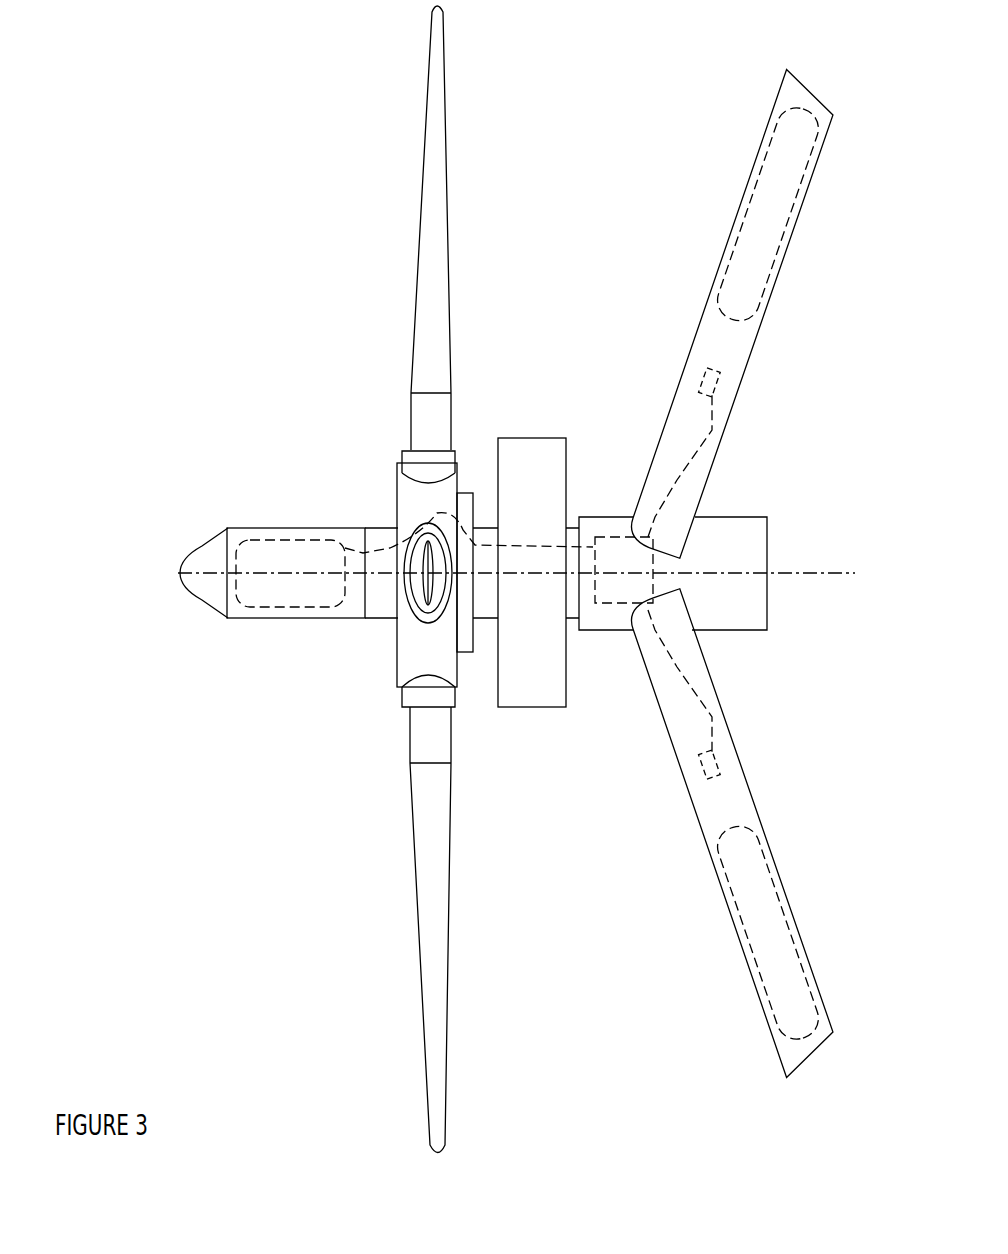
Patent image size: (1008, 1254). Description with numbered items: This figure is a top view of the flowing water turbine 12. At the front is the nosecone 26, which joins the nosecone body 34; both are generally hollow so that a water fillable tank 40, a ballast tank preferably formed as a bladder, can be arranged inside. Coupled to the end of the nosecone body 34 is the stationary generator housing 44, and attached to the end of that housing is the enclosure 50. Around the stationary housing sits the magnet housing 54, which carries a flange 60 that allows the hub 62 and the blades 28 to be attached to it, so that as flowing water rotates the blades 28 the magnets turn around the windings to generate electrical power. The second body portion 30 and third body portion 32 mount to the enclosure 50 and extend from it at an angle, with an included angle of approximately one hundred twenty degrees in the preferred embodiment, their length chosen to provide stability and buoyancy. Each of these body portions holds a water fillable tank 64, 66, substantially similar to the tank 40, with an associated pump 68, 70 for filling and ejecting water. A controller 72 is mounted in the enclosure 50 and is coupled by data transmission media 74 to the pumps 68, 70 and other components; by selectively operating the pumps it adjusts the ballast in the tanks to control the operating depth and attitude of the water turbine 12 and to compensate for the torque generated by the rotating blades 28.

The water turbine 12 is at (200, 247).
The nosecone 26 is at (207, 608).
The blades 28 is at (450, 868).
The second body portion 30 is at (783, 82).
The third body portion 32 is at (778, 1053).
The nosecone body 34 is at (267, 527).
The water fillable tank 40 is at (255, 608).
The stationary generator housing 44 is at (384, 528).
The enclosure 50 is at (758, 517).
The magnet housing 54 is at (527, 707).
The flange 60 is at (473, 515).
The hub 62 is at (395, 660).
The water fillable tank 64 is at (790, 215).
The water fillable tank 66 is at (772, 875).
The pump 68 is at (700, 376).
The pump 70 is at (707, 782).
The controller 72 is at (598, 540).
The data transmission media 74 is at (712, 428).